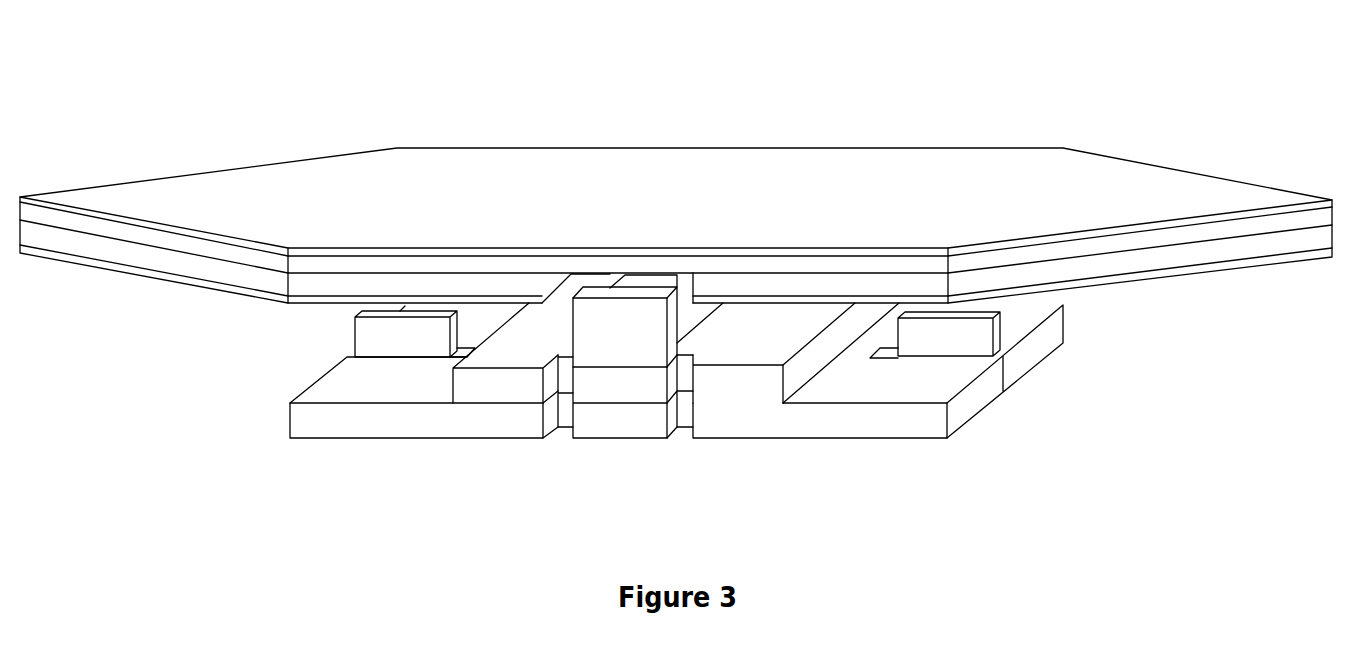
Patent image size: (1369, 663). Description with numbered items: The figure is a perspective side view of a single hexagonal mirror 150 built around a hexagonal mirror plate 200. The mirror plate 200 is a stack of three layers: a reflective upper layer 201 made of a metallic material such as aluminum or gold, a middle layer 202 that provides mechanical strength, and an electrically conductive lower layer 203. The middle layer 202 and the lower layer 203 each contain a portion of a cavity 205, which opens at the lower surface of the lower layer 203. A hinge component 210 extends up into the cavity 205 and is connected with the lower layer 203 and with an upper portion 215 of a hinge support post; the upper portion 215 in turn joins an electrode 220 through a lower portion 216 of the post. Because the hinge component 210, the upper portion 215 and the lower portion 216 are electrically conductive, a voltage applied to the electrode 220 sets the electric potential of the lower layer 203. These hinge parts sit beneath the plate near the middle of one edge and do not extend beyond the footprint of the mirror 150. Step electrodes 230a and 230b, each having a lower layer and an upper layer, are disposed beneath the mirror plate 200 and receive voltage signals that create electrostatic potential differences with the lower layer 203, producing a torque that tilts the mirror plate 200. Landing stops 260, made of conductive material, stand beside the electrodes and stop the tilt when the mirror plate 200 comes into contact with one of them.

The hexagonal mirror 150 is at (932, 60).
The hexagonal mirror plate 200 is at (1150, 163).
The reflective upper layer 201 is at (1290, 224).
The middle layer 202 is at (1237, 250).
The lower layer 203 is at (1302, 264).
The cavity 205 is at (568, 290).
The hinge component 210 is at (638, 298).
The upper portion of hinge support post 215 is at (625, 327).
The lower portion of hinge support post 216 is at (602, 385).
The electrode 220 is at (652, 423).
The step electrode 230a is at (755, 385).
The step electrode 230b is at (333, 430).
The landing stop 260 is at (368, 331).